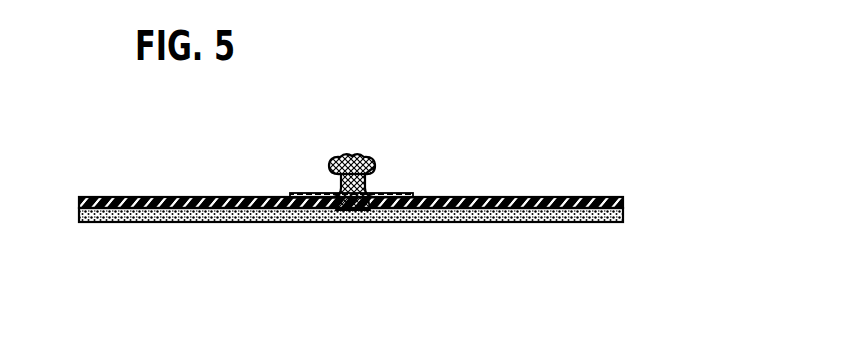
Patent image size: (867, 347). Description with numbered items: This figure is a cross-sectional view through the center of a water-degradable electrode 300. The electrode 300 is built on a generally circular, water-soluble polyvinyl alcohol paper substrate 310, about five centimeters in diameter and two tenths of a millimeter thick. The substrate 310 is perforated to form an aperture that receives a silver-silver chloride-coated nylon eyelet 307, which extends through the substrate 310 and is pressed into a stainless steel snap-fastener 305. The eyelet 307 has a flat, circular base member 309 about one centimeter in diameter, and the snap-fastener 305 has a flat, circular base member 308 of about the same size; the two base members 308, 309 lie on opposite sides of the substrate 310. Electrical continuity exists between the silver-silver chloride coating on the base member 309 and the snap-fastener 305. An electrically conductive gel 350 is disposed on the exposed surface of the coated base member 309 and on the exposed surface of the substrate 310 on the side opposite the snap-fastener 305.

The electrode 300 is at (394, 189).
The snap-fastener 305 is at (356, 156).
The eyelet 307 is at (377, 165).
The base member 308 is at (400, 193).
The base member 309 is at (290, 197).
The substrate 310 is at (351, 170).
The electrically conductive gel 350 is at (351, 249).